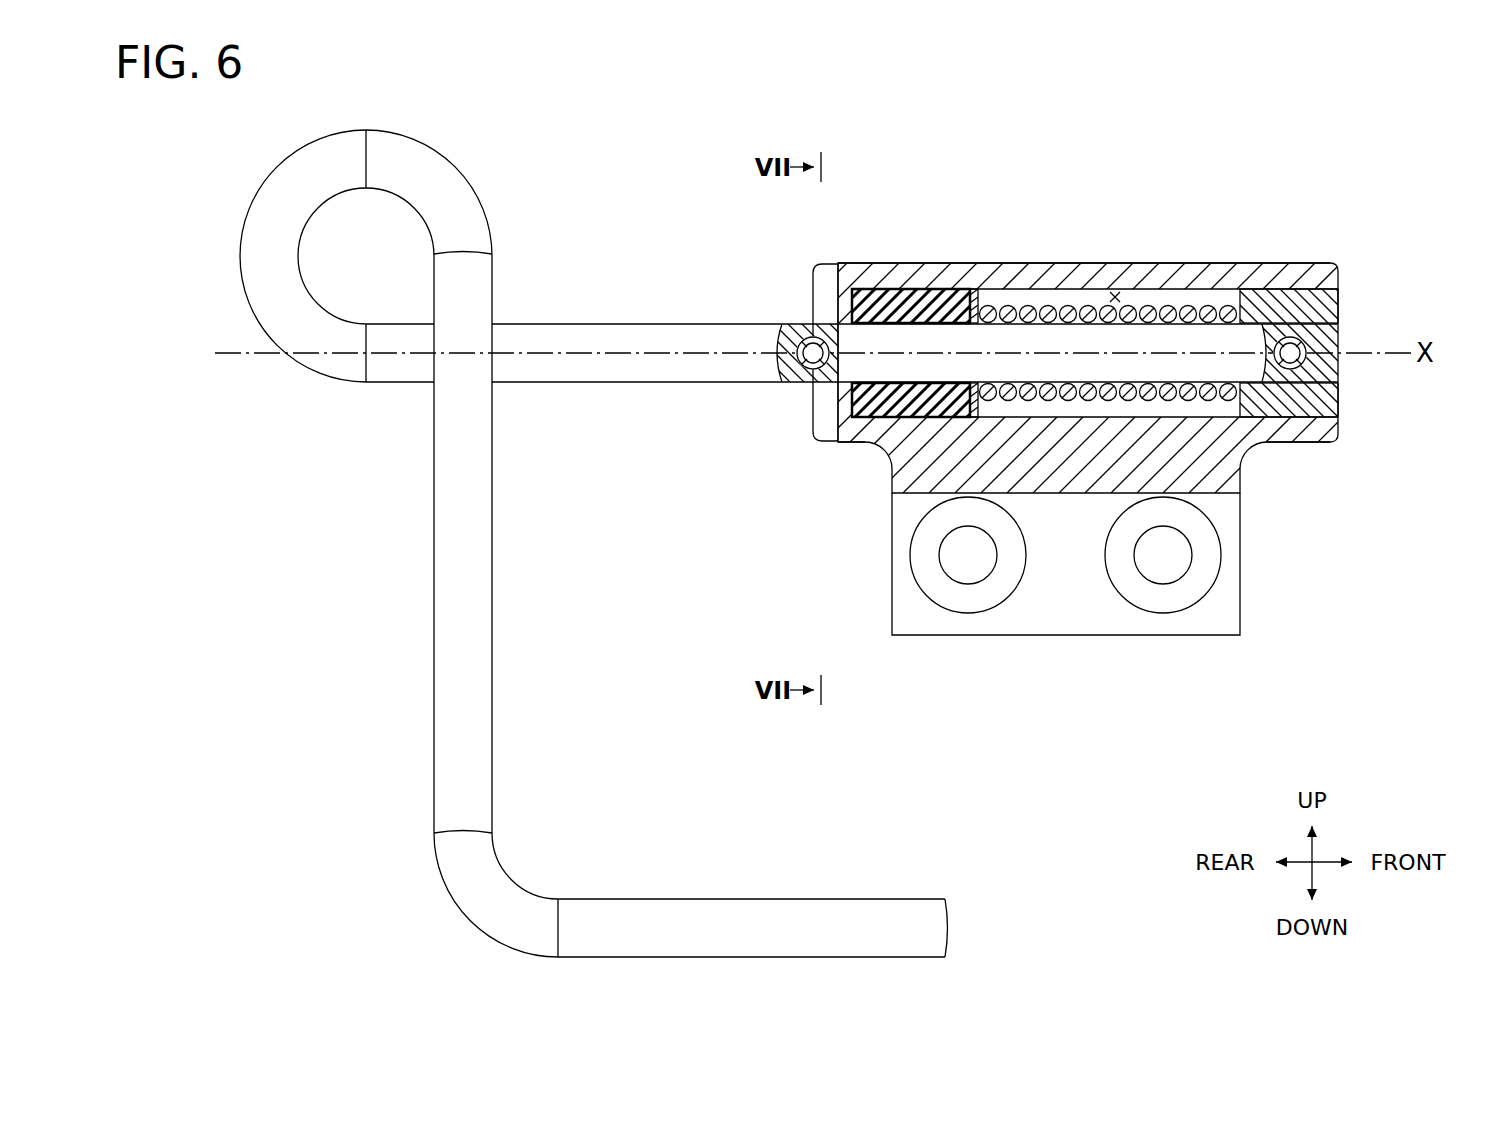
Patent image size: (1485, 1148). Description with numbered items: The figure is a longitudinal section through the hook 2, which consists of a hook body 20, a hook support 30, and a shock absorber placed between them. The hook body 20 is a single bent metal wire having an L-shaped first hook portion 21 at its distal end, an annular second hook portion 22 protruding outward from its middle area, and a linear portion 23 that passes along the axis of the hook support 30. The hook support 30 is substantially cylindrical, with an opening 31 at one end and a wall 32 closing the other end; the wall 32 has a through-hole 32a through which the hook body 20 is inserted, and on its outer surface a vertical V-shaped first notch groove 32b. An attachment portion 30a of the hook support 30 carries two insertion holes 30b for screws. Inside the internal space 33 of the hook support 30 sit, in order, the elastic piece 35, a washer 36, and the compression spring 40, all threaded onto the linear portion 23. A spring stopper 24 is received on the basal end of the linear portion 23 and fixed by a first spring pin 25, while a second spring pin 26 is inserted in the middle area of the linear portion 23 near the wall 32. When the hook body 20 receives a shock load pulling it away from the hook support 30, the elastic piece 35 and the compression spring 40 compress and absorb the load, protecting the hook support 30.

The hook 2 is at (1095, 148).
The hook body 20 is at (497, 178).
The first hook portion 21 is at (426, 892).
The second hook portion 22 is at (288, 372).
The linear portion 23 is at (605, 308).
The spring stopper 24 is at (1333, 305).
The first spring pin 25 is at (1290, 340).
The second spring pin 26 is at (778, 345).
The hook support 30 is at (1175, 243).
The attachment portion 30a is at (1228, 508).
The insertion holes 30b is at (978, 580).
The opening 31 is at (1337, 289).
The wall 32 is at (840, 300).
The through-hole 32a is at (875, 292).
The first notch groove 32b is at (813, 425).
The internal space 33 is at (1115, 295).
The elastic piece 35 is at (937, 300).
The washer 36 is at (975, 300).
The compression spring 40 is at (1040, 305).